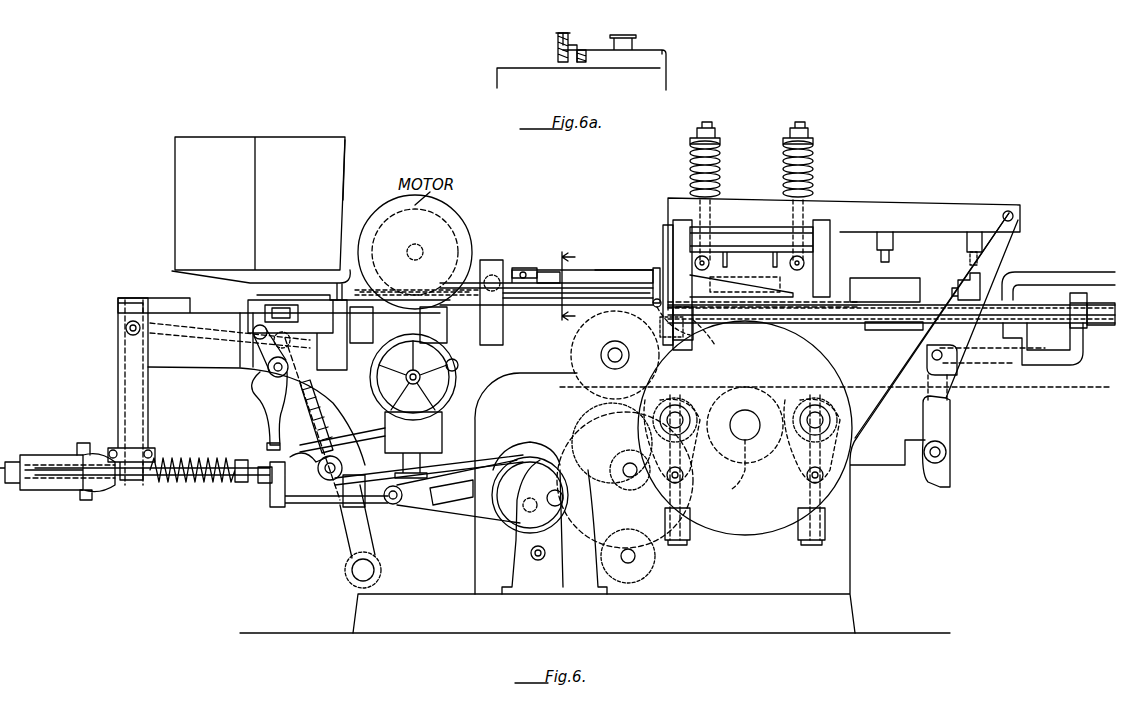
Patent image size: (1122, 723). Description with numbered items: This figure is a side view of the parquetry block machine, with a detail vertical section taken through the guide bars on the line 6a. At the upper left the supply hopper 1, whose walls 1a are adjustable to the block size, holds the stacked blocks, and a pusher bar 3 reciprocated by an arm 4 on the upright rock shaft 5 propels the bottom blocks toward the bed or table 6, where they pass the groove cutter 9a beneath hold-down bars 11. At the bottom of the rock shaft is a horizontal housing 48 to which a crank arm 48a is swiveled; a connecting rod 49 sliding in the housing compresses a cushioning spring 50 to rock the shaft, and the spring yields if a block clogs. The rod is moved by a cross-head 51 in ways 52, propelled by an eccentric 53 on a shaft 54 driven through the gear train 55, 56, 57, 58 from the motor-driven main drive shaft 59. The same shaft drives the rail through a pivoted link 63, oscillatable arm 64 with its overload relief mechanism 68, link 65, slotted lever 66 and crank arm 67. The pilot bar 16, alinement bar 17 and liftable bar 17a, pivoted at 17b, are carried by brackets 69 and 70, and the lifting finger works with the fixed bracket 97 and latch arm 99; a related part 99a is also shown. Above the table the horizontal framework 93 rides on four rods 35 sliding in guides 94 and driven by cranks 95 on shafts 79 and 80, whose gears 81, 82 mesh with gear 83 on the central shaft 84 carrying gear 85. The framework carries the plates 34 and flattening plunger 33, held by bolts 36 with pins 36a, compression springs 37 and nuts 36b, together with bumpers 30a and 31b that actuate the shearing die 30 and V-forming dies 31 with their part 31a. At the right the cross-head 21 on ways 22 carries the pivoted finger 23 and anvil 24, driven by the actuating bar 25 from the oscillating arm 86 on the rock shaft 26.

In FIG. 6, the supply hopper 1 is at (260, 203).
In FIG. 6, the hopper walls 1a is at (346, 142).
In FIG. 6, the pusher bar 3 is at (312, 302).
In FIG. 6, the arm 4 is at (185, 305).
In FIG. 6, the rock shaft 5 is at (118, 388).
In FIG. 6A, the bed or table 6 is at (548, 70).
In FIG. 6, the bed or table 6 is at (516, 306).
In FIG. 6, the section line 6a is at (579, 287).
In FIG. 6, the groove cutter 9a is at (450, 222).
In FIG. 6, the hold-down bars 11 is at (470, 278).
In FIG. 6A, the pilot bar 16 is at (584, 63).
In FIG. 6, the pilot bar 16 is at (480, 300).
In FIG. 6A, the alinement bar 17 is at (556, 55).
In FIG. 6, the alinement bar 17 is at (552, 300).
In FIG. 6A, the liftable bar 17a is at (558, 35).
In FIG. 6, the liftable bar 17a is at (620, 270).
In FIG. 6A, the pivot 17b is at (568, 32).
In FIG. 6, the pivot 17b is at (520, 266).
In FIG. 6, the cross-head 21 is at (1045, 290).
In FIG. 6, the horizontal ways 22 is at (1035, 300).
In FIG. 6, the pivoted finger 23 is at (1088, 328).
In FIG. 6, the anvil member 24 is at (1078, 293).
In FIG. 6, the actuating bar 25 is at (1055, 365).
In FIG. 6, the rock shaft 26 is at (947, 452).
In FIG. 6, the ribbon shearing die 30 is at (975, 285).
In FIG. 6, the bumpers 30a is at (968, 255).
In FIG. 6, the V-forming dies 31 is at (885, 290).
In FIG. 6, the plate extension 31a is at (890, 330).
In FIG. 6, the bumpers 31b is at (890, 258).
In FIG. 6, the flattening plunger 33 is at (741, 285).
In FIG. 6, the plates 34 is at (751, 250).
In FIG. 6, the reciprocating rods 35 is at (673, 225).
In FIG. 6, the vertical bolts 36 is at (805, 210).
In FIG. 6, the transverse pins 36a is at (806, 262).
In FIG. 6, the nuts 36b is at (810, 135).
In FIG. 6, the compression springs 37 is at (813, 158).
In FIG. 6, the horizontal housing 48 is at (70, 490).
In FIG. 6, the crank arm 48a is at (100, 490).
In FIG. 6, the connecting rod 49 is at (255, 490).
In FIG. 6, the cushioning spring 50 is at (210, 490).
In FIG. 6, the cross-head 51 is at (375, 497).
In FIG. 6, the ways 52 is at (394, 506).
In FIG. 6, the eccentric 53 is at (510, 515).
In FIG. 6, the shaft 54 is at (530, 545).
In FIG. 6, the gear 55 is at (480, 545).
In FIG. 6, the pinion 56 is at (622, 460).
In FIG. 6, the gear 57 is at (583, 425).
In FIG. 6, the gear 58 is at (655, 563).
In FIG. 6, the main drive shaft 59 is at (632, 563).
In FIG. 6, the pivoted link 63 is at (210, 345).
In FIG. 6, the oscillatable arm 64 is at (262, 385).
In FIG. 6, the link 65 is at (440, 465).
In FIG. 6, the oscillating slotted lever 66 is at (515, 458).
In FIG. 6, the crank arm 67 is at (565, 560).
In FIG. 6, the spring-controlled overload relief mechanism 68 is at (300, 425).
In FIG. 6A, the bracket 69 is at (590, 50).
In FIG. 6, the bracket 69 is at (540, 270).
In FIG. 6, the bracket 70 is at (652, 282).
In FIG. 6, the shaft 79 is at (684, 442).
In FIG. 6, the shaft 80 is at (804, 442).
In FIG. 6, the gear 81 is at (690, 410).
In FIG. 6, the gear 82 is at (805, 410).
In FIG. 6, the gear 83 is at (745, 385).
In FIG. 6, the central shaft 84 is at (742, 471).
In FIG. 6, the gear 85 is at (760, 528).
In FIG. 6, the upstanding oscillating arm 86 is at (950, 410).
In FIG. 6, the horizontal framework 93 is at (905, 215).
In FIG. 6, the guides 94 is at (690, 535).
In FIG. 6, the cranks 95 is at (652, 428).
In FIG. 6, the fixed bracket 97 is at (640, 300).
In FIG. 6, the latch arm 99 is at (663, 240).
In FIG. 6, the arm link 99a is at (700, 330).